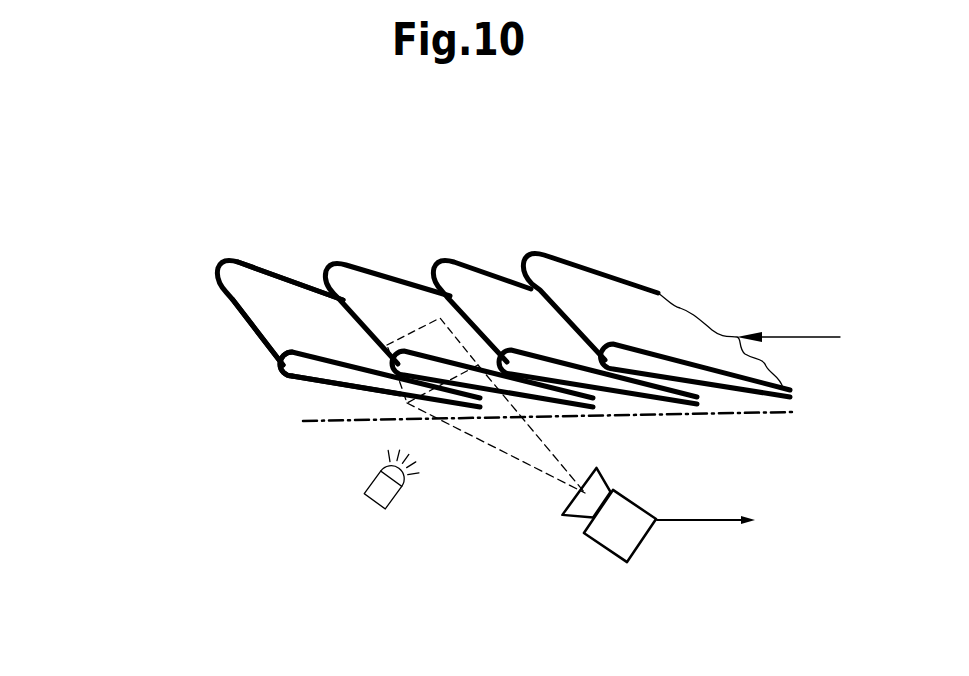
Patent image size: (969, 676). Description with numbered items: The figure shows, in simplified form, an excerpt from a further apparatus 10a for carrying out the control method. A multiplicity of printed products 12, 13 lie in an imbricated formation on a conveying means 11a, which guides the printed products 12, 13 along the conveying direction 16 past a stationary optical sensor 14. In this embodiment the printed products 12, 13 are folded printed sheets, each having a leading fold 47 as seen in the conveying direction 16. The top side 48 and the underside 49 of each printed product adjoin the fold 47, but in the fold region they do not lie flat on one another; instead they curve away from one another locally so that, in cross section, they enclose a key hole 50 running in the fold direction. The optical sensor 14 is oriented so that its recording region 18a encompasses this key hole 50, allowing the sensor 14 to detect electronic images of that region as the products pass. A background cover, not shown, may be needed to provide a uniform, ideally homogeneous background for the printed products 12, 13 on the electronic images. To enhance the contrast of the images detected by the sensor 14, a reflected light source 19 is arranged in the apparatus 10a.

The apparatus 10a is at (236, 534).
The printed product 12 is at (247, 273).
The printed product 13 is at (478, 293).
The top side 48 is at (288, 308).
The leading fold 47 is at (230, 298).
The key hole 50 is at (285, 367).
The underside 49 is at (302, 382).
The recording region 18a is at (425, 322).
The conveying direction 16 is at (797, 337).
The conveying means 11a is at (722, 428).
The reflected light source 19 is at (383, 497).
The optical sensor 14 is at (628, 537).